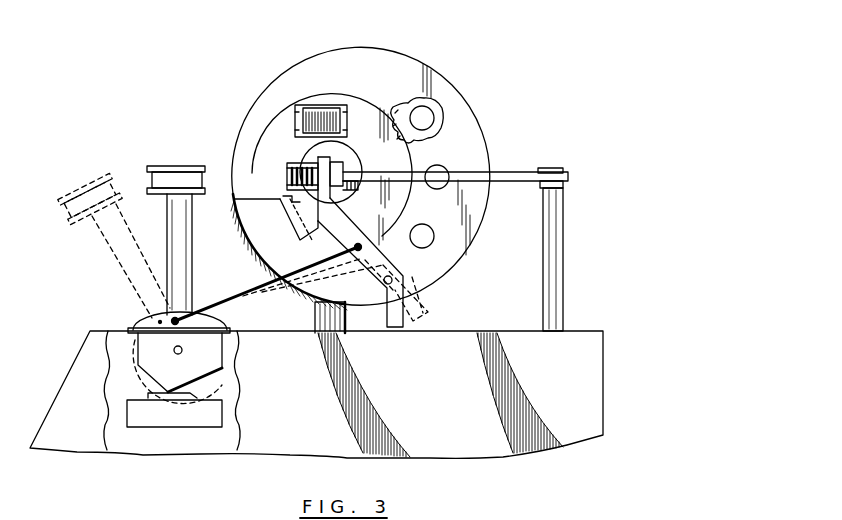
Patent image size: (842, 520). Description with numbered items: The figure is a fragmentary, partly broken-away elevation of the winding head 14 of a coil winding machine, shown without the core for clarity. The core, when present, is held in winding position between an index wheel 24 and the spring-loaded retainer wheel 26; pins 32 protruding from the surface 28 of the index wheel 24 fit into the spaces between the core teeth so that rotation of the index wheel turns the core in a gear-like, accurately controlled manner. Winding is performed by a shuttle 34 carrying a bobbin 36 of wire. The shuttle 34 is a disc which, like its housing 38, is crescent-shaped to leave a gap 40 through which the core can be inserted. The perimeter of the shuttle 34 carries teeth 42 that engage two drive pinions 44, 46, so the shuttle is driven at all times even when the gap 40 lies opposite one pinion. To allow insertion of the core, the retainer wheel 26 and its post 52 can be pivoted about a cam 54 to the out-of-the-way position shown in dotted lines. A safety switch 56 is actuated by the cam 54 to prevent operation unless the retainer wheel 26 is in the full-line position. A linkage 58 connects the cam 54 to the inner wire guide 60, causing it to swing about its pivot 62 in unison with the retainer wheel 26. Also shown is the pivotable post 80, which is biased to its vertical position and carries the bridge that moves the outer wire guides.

The winding head 14 is at (447, 57).
The index wheel 24 is at (290, 200).
The retainer wheel 26 is at (178, 176).
The surface 28 is at (288, 175).
The pins 32 is at (309, 163).
The shuttle 34 is at (281, 120).
The bobbin 36 is at (314, 108).
The housing 38 is at (459, 142).
The gap 40 is at (248, 205).
The teeth 42 is at (393, 107).
The pinion 44 is at (423, 118).
The pinion 46 is at (428, 232).
The post 52 is at (178, 272).
The cam 54 is at (197, 353).
The safety switch 56 is at (197, 412).
The linkage 58 is at (215, 310).
The inner wire guide 60 is at (410, 285).
The pivot 62 is at (385, 284).
The post 80 is at (553, 250).